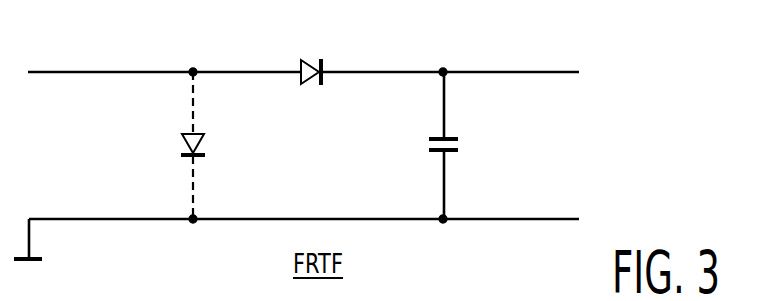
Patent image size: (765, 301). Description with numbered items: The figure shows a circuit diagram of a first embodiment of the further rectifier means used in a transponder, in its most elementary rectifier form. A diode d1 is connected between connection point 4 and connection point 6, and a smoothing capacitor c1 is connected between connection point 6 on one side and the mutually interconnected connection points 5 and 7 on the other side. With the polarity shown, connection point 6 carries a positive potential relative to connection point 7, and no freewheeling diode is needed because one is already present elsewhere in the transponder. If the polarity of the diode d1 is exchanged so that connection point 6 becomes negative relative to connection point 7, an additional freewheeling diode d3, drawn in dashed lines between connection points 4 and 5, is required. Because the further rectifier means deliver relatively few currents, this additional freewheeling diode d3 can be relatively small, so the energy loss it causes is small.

The connection point 4 is at (40, 72).
The connection point 5 is at (40, 219).
The connection point 6 is at (565, 71).
The connection point 7 is at (565, 219).
The diode d1 is at (310, 66).
The additional freewheeling diode d3 is at (205, 139).
The smoothing capacitor c1 is at (430, 143).